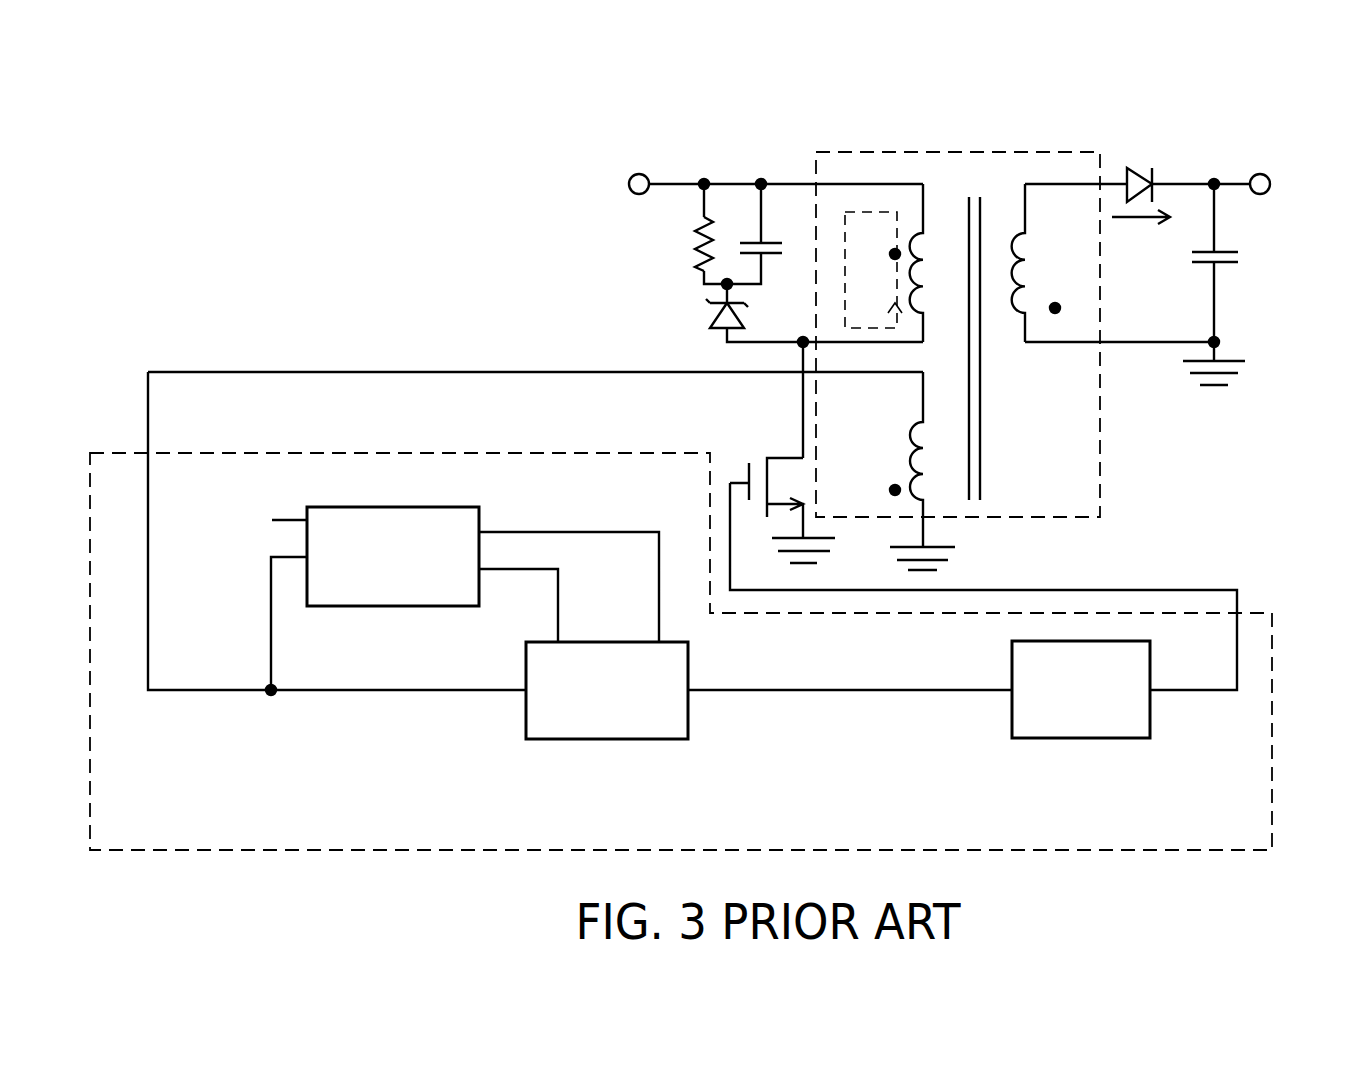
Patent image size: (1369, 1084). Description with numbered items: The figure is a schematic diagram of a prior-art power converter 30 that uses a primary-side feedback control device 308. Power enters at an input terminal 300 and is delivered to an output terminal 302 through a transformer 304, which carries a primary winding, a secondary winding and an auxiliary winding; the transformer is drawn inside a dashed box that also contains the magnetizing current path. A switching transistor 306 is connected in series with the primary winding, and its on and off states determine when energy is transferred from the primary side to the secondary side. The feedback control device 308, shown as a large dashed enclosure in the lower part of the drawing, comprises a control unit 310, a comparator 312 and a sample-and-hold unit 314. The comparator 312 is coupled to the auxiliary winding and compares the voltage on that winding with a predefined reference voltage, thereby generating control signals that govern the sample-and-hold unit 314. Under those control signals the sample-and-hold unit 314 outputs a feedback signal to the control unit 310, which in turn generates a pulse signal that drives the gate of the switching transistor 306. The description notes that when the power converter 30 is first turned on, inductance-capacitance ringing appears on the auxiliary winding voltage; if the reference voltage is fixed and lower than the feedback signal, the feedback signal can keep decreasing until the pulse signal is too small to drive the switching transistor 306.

The power converter 30 is at (1170, 115).
The input terminal (VIN) 300 is at (639, 195).
The output terminal (VOUT) 302 is at (1260, 195).
The transformer 304 is at (890, 152).
The switching transistor 306 is at (790, 450).
The feedback control device 308 is at (1263, 613).
The control unit 310 is at (1117, 738).
The comparator 312 is at (337, 507).
The sample-and-hold unit 314 is at (550, 642).